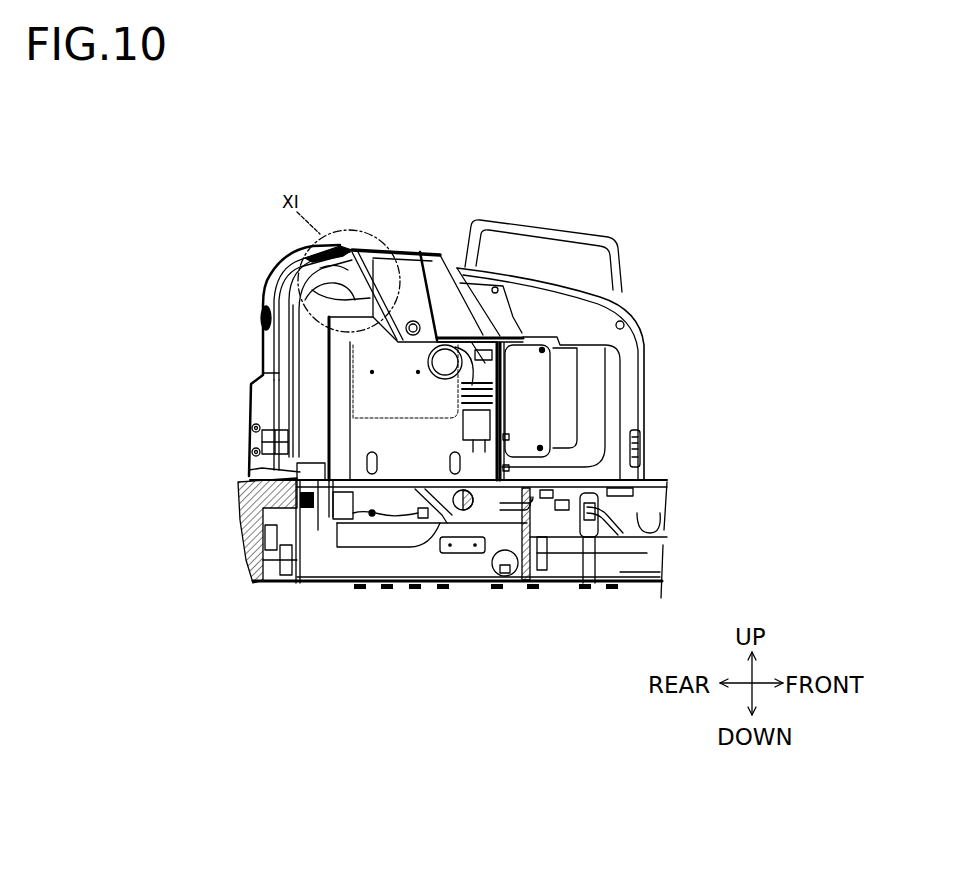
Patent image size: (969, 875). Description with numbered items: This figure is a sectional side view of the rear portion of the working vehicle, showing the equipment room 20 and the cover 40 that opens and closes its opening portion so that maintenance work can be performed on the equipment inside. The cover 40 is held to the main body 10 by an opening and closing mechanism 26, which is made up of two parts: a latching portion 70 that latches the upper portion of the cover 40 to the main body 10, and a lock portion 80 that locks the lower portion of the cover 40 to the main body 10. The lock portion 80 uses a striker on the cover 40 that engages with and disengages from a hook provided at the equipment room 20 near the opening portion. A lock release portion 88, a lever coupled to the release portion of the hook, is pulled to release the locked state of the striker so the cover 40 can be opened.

The main body 10 is at (340, 433).
The equipment room 20 is at (402, 292).
The opening and closing mechanism 26 is at (125, 276).
The cover 40 is at (258, 365).
The latching portion 70 is at (305, 246).
The lock portion 80 is at (242, 442).
The lock release portion 88 is at (240, 484).